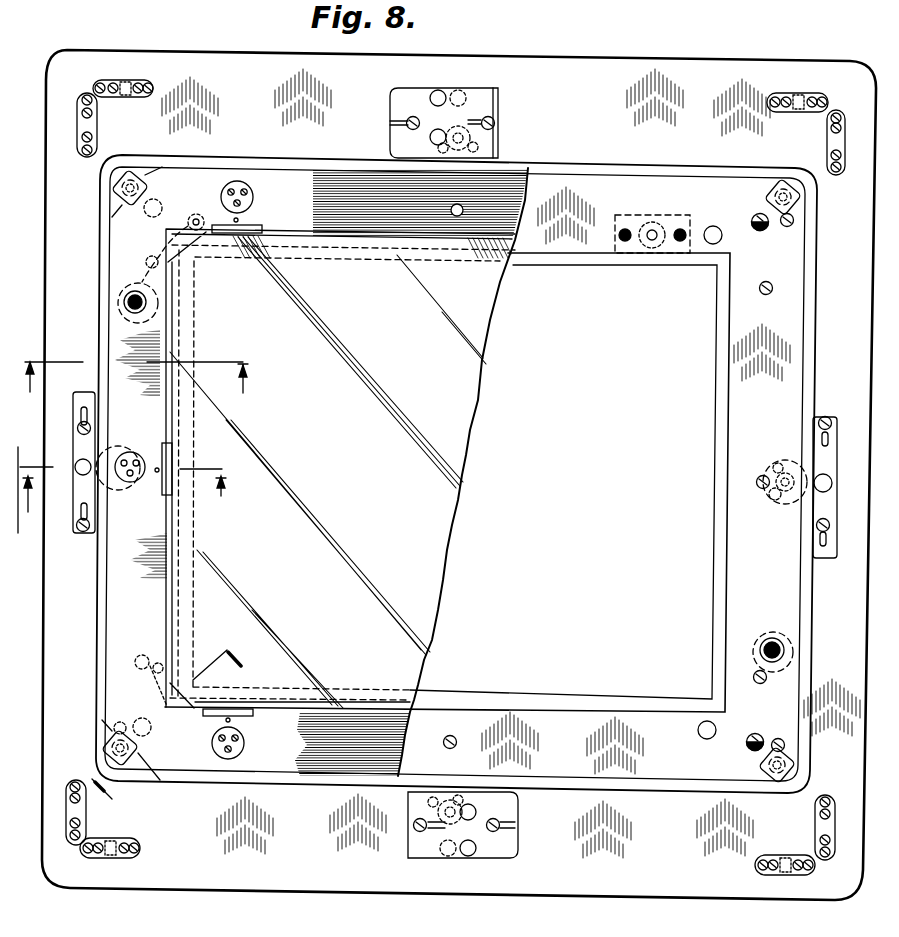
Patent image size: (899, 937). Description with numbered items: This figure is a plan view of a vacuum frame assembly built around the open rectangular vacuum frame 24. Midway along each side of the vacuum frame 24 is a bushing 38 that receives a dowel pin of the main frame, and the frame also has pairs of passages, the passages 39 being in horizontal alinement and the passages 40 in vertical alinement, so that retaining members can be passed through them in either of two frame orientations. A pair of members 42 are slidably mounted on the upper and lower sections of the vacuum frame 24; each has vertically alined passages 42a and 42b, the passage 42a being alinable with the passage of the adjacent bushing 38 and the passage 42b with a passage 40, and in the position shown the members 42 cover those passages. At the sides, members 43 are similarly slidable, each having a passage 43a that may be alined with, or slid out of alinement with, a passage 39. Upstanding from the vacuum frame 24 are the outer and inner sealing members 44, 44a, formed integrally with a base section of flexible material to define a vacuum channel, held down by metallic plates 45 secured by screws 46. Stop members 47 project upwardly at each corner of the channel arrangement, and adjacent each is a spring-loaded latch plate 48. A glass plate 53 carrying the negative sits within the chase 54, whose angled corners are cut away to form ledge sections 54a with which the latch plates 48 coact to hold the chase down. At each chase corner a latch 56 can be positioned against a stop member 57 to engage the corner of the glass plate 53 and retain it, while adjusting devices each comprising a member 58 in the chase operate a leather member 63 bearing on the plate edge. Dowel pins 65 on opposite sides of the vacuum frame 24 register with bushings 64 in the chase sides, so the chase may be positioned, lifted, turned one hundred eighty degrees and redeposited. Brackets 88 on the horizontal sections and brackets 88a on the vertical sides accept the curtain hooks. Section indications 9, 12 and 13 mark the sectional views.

The vacuum frame 24 is at (612, 68).
The member 42 is at (433, 96).
The passage 42a is at (430, 137).
The passage 42b is at (463, 92).
The passage 40 is at (467, 99).
The bushing 38 is at (770, 493).
The bracket 88 is at (123, 85).
The bracket 88a is at (78, 134).
The latch plate 48 is at (130, 174).
The ledge section 54a is at (150, 188).
The member 58 is at (233, 182).
The chase 54 is at (270, 178).
The member 63 is at (250, 225).
The dowel pin 65 is at (127, 302).
The bushing 64 is at (128, 308).
The section line 13 is at (135, 390).
The passage 39 is at (80, 461).
The passage 43a is at (93, 478).
The section line 12 is at (125, 490).
The member 43 is at (72, 516).
The glass plate 53 is at (463, 431).
The plate 45 is at (790, 588).
The screw 46 is at (458, 745).
The sealing member 44a is at (650, 702).
The sealing member 44 is at (614, 786).
The stop member 47 is at (760, 217).
The section line 9 is at (174, 735).
The stop member 57 is at (156, 662).
The latch 56 is at (142, 672).